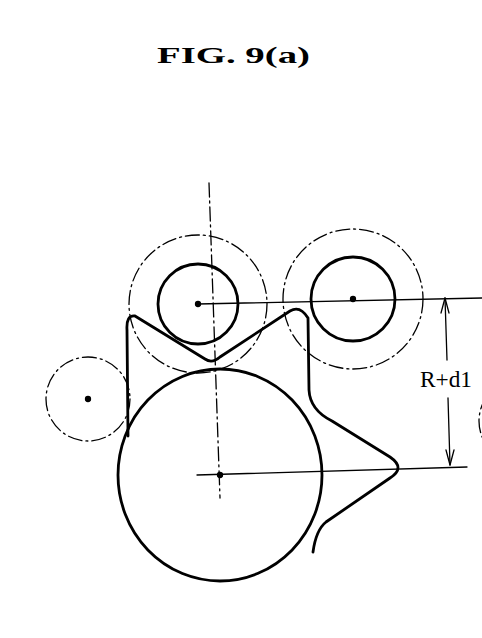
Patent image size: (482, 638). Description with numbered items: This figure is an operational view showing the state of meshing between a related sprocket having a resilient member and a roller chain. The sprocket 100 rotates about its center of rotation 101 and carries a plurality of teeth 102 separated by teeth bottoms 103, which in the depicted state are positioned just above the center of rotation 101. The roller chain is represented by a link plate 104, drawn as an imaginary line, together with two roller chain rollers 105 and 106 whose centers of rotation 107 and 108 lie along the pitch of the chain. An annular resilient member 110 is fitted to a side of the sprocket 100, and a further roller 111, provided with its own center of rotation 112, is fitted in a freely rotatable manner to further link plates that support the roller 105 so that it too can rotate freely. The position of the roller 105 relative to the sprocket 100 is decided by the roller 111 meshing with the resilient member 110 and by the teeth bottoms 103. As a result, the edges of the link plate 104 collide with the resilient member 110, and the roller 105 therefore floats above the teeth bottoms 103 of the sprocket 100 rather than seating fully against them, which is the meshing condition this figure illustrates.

The sprocket 100 is at (326, 522).
The center of rotation of the sprocket 101 is at (218, 478).
The teeth of the sprocket 102 is at (125, 318).
The teeth bottoms of the sprocket 103 is at (258, 300).
The roll chain link plate 104 is at (410, 257).
The roller chain roller 105 is at (194, 266).
The roller chain roller 106 is at (334, 258).
The center of rotation of the roller 107 is at (176, 286).
The center of rotation of the roller 108 is at (353, 299).
The annular resilient member 110 is at (152, 555).
The roller 111 is at (72, 362).
The center of rotation of the roller 112 is at (88, 399).